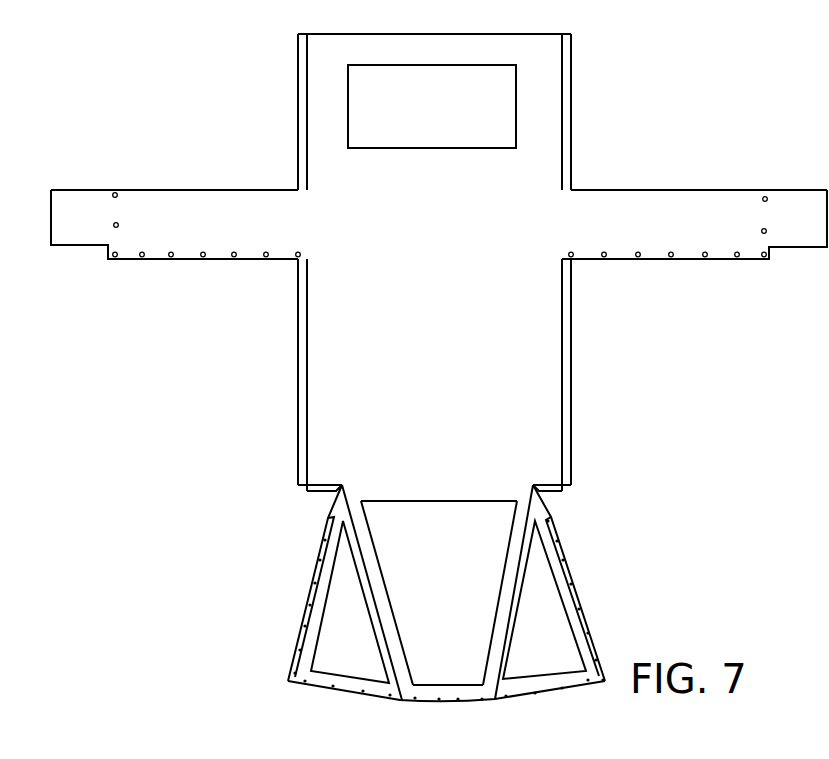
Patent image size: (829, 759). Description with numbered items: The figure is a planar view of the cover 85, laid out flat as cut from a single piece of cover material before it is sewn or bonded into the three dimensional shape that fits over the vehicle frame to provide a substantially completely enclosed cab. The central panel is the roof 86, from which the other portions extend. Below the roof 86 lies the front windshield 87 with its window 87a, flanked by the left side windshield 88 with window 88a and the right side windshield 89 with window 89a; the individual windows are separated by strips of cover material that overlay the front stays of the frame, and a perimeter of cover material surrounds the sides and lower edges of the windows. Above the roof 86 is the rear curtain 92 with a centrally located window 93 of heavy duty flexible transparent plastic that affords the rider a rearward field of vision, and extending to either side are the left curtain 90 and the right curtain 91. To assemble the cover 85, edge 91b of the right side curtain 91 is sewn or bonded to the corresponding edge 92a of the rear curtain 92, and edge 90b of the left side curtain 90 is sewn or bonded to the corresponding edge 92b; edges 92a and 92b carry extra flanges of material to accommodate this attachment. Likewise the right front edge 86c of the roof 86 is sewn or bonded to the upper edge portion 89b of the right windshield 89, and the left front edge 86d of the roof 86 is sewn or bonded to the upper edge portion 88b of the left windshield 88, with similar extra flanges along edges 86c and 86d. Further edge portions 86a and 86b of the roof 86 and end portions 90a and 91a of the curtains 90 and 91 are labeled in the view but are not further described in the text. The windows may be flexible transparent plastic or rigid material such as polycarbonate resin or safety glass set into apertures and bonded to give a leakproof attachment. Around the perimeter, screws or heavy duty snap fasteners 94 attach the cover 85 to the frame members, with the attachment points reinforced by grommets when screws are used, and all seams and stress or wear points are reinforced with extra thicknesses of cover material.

The cover 85 is at (289, 437).
The roof 86 is at (535, 427).
The right side wall 86a is at (572, 382).
The left side wall 86b is at (300, 382).
The right front edge of roof 86c is at (323, 488).
The left front edge of roof 86d is at (569, 489).
The front windshield 87 is at (452, 692).
The front window 87a is at (474, 596).
The left side windshield 88 is at (552, 690).
The left side window 88a is at (555, 635).
The upper edge portion of left windshield 88b is at (535, 506).
The right side windshield 89 is at (345, 690).
The right side window 89a is at (335, 643).
The upper edge portion of right windshield 89b is at (340, 503).
The left curtain 90 is at (688, 238).
The right shelf step 90a is at (800, 235).
The edge of left side curtain 90b is at (682, 190).
The right curtain 91 is at (190, 238).
The left shelf step 91a is at (80, 230).
The edge of right side curtain 91b is at (207, 189).
The rear curtain 92 is at (313, 106).
The edge of rear curtain 92a is at (302, 143).
The edge of rear curtain 92b is at (568, 127).
The window 93 is at (453, 125).
The screws or heavy duty snap fasteners 94 is at (117, 223).